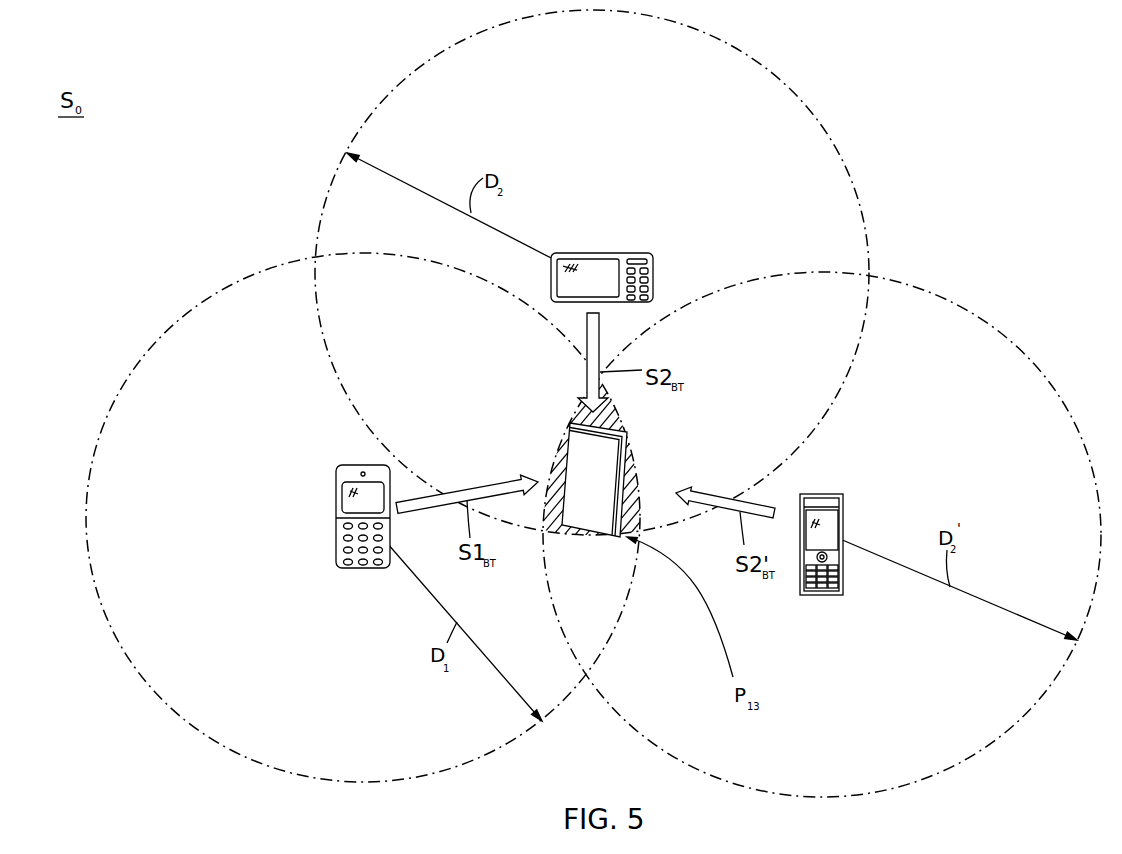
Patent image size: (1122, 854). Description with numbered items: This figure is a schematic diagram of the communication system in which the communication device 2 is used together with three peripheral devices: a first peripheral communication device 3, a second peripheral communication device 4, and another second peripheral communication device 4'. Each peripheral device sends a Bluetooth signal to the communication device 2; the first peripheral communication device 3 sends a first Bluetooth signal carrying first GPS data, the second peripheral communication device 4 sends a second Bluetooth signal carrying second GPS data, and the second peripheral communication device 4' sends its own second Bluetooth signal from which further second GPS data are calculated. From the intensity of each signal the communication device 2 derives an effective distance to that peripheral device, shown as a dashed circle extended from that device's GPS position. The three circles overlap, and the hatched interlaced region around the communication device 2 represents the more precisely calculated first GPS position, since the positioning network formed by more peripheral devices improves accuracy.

The communication device 2 is at (630, 488).
The first peripheral communication device 3 is at (369, 572).
The second peripheral communication device 4 is at (602, 255).
The second peripheral communication device 4' is at (821, 569).